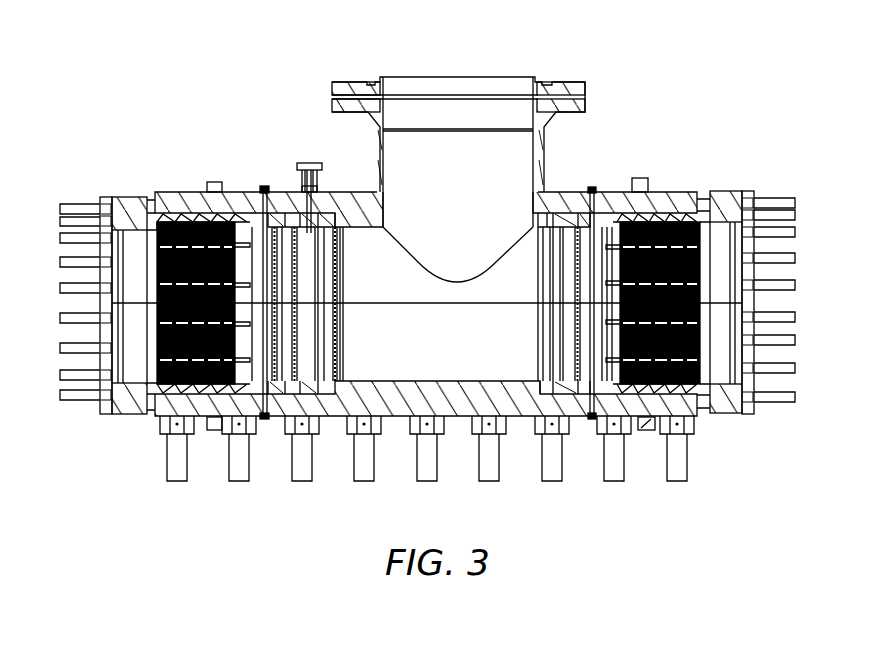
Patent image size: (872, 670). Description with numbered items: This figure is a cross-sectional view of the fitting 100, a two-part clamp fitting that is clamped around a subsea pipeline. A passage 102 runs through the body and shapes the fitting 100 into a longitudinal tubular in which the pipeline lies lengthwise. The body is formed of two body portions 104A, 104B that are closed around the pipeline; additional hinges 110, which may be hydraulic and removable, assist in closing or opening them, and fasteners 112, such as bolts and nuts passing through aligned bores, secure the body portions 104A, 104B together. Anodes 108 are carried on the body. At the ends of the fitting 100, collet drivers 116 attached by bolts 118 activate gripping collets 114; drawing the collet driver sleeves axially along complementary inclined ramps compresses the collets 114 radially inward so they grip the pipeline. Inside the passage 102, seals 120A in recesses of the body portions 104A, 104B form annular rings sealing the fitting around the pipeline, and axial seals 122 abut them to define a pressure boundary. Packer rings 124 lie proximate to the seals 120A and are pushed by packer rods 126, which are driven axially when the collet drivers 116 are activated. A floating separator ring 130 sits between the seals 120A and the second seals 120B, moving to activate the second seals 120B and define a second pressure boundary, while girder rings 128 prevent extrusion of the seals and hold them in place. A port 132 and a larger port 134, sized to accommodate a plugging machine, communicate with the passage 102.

The fitting 100 is at (598, 54).
The passage 102 is at (463, 379).
The body portion 104A is at (692, 190).
The body portion 104B is at (665, 402).
The anode 108 is at (210, 182).
The hinge 110 is at (723, 350).
The fastener 112 is at (422, 481).
The collet 114 is at (168, 392).
The collet driver 116 is at (137, 232).
The bolt 118 is at (772, 192).
The seal 120A is at (290, 247).
The second seal 120B is at (328, 335).
The axial seal 122 is at (303, 303).
The packer ring 124 is at (272, 387).
The packer rod 126 is at (252, 390).
The girder ring 128 is at (340, 358).
The ring 130 is at (307, 277).
The port 132 is at (303, 160).
The port 134 is at (346, 80).